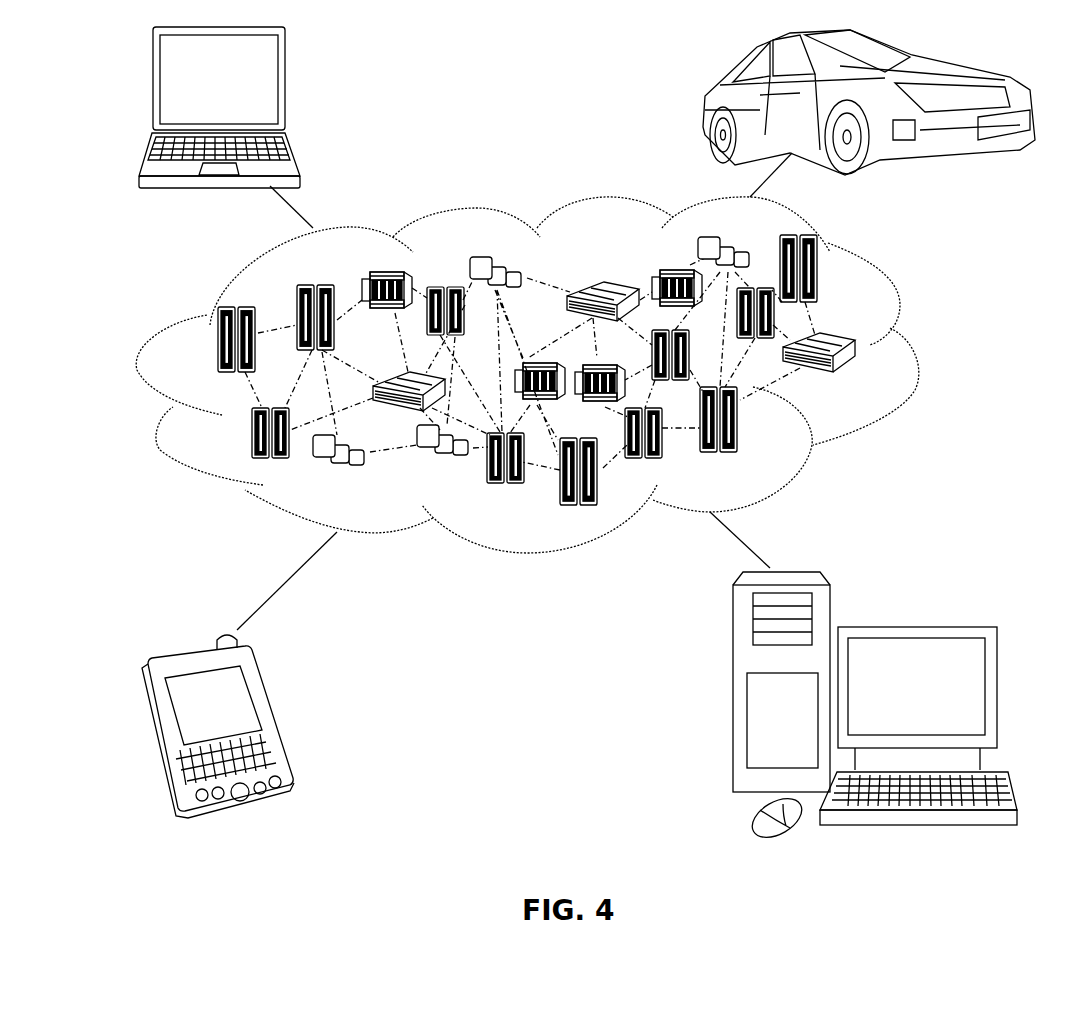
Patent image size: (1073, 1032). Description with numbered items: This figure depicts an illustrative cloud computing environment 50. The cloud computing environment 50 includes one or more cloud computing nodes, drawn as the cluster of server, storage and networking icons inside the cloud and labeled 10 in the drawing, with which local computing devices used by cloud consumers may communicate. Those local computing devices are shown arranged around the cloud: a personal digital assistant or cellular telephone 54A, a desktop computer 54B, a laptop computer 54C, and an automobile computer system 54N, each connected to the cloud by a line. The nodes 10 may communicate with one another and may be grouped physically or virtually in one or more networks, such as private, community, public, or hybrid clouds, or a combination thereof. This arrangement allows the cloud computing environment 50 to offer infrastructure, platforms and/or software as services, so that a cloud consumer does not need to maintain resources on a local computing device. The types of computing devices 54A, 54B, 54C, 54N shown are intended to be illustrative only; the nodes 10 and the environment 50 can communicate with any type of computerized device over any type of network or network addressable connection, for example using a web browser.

The cloud computing node 10 is at (858, 378).
The cloud computing environment 50 is at (918, 348).
The personal digital assistant (PDA) or cellular telephone 54A is at (278, 716).
The desktop computer 54B is at (913, 623).
The laptop computer 54C is at (287, 88).
The automobile computer system 54N is at (703, 102).